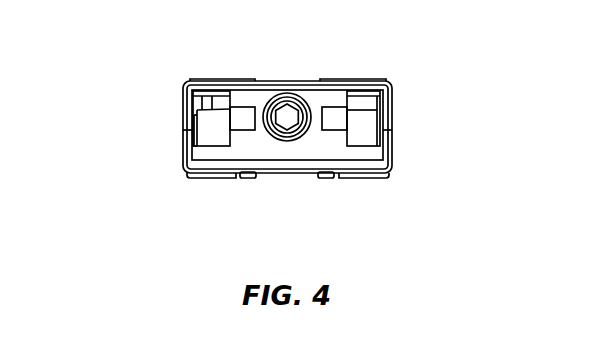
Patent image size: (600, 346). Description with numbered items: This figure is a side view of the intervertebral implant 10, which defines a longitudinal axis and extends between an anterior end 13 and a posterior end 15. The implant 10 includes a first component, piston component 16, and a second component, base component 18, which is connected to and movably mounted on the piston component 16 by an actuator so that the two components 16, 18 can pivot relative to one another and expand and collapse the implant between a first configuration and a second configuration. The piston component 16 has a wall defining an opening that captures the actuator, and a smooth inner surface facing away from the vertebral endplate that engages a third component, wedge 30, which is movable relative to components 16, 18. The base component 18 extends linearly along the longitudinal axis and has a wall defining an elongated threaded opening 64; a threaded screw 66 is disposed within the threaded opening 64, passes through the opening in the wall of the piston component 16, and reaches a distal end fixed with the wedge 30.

The intervertebral implant 10 is at (405, 21).
The anterior end 13 is at (414, 117).
The posterior end 15 is at (168, 119).
The piston component 16 is at (212, 82).
The base component 18 is at (220, 174).
The wedge 30 is at (363, 123).
The threaded opening 64 is at (293, 125).
The threaded screw 66 is at (286, 120).